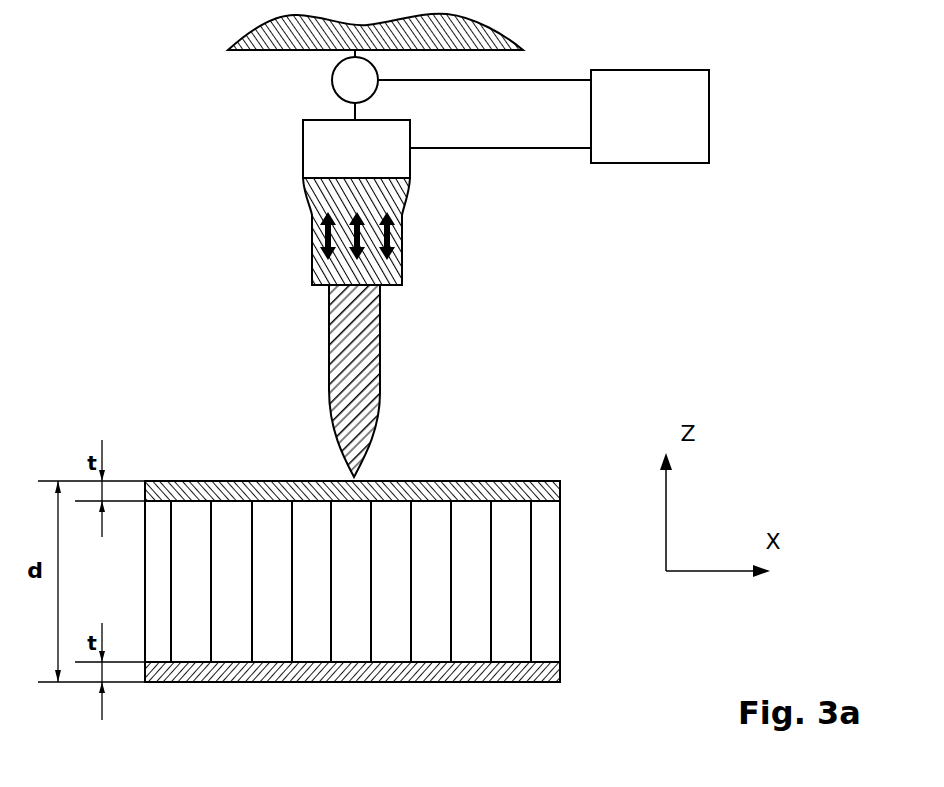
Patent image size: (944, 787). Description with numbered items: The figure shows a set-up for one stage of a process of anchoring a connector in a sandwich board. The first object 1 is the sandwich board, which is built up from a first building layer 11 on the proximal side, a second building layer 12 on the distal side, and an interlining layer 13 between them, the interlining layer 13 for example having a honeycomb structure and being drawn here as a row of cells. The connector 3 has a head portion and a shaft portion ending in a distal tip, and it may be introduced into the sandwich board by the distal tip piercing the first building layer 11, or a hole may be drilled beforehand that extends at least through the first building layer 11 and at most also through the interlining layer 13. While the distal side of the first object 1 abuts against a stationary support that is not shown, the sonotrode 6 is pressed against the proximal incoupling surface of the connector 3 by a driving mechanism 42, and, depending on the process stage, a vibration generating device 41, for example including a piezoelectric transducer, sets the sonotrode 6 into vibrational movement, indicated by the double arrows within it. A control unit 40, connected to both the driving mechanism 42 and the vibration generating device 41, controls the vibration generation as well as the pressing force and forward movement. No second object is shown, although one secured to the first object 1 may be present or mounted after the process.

The first object 1 is at (390, 574).
The connector 3 is at (357, 380).
The sonotrode 6 is at (380, 268).
The first building layer 11 is at (508, 490).
The second building layer 12 is at (558, 685).
The interlining layer 13 is at (540, 618).
The control unit 40 is at (687, 105).
The vibration generating device 41 is at (315, 150).
The driving mechanism 42 is at (332, 80).